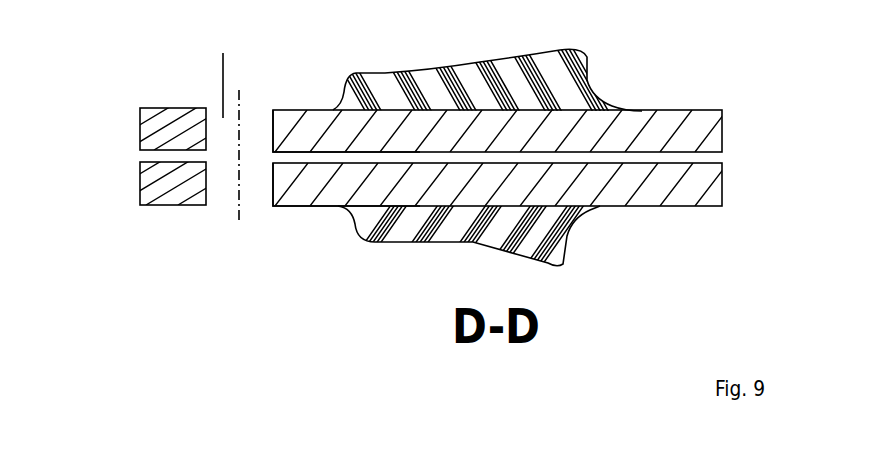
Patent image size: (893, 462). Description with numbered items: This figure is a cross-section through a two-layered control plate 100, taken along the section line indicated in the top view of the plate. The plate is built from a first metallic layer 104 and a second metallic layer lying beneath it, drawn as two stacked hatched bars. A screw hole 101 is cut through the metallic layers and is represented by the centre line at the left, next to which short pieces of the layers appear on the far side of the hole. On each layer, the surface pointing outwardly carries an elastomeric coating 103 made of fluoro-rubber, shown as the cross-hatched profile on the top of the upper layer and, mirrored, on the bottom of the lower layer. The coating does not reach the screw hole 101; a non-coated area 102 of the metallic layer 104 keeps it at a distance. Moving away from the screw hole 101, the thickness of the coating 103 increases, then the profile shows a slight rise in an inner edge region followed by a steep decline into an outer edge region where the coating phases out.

The control plate 100 is at (637, 229).
The screw hole 101 is at (224, 127).
The non-coated area 102 is at (175, 118).
The elastomeric coating 103 is at (464, 82).
The first metallic layer 104 is at (660, 112).